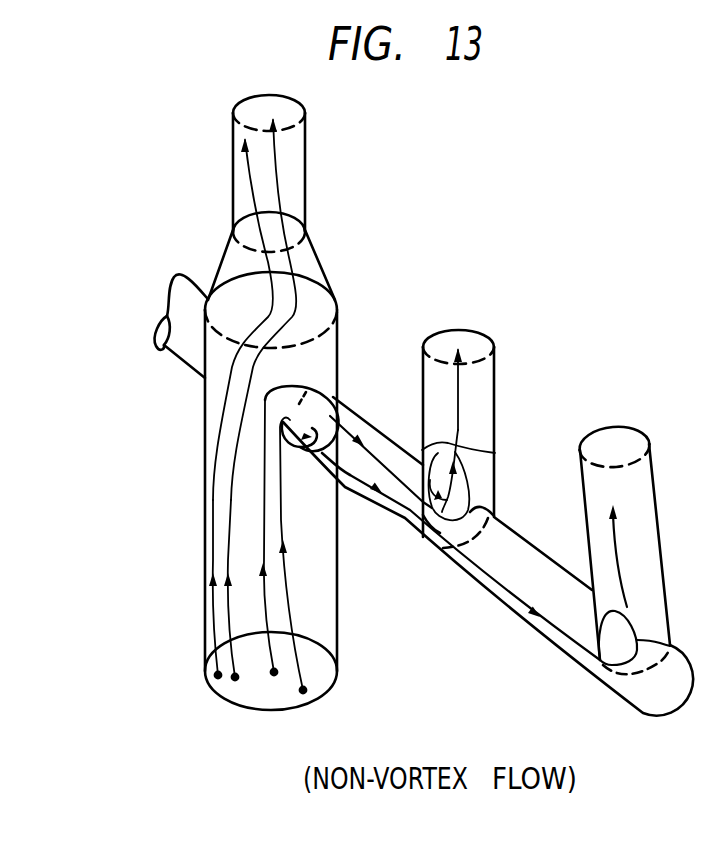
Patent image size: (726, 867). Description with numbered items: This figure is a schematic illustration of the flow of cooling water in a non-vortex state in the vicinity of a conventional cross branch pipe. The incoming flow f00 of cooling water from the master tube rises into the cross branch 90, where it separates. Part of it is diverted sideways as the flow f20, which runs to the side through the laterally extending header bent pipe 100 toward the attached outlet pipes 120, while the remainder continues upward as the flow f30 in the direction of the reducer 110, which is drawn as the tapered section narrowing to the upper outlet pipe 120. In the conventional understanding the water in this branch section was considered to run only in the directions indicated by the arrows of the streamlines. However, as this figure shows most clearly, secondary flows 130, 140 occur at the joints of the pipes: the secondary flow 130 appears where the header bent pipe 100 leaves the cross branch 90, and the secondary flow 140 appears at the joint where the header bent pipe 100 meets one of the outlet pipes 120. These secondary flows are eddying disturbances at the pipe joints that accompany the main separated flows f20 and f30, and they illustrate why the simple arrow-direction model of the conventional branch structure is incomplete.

The cross branch 90 is at (337, 578).
The header bent pipe 100 is at (360, 414).
The reducer 110 is at (320, 258).
The outlet pipes 120 is at (305, 195).
The secondary flow 130 is at (347, 487).
The secondary flow 140 is at (495, 452).
The flow of cooling water from the master tube f00 is at (312, 637).
The flow into the header bent pipe f20 is at (384, 462).
The flow in the direction of the reducer f30 is at (272, 165).